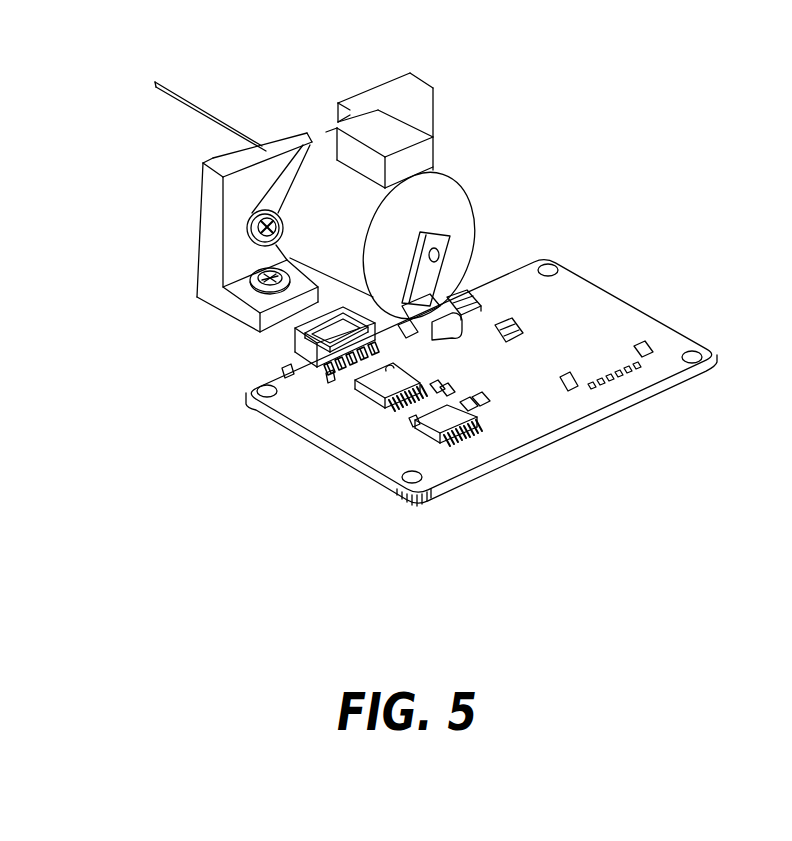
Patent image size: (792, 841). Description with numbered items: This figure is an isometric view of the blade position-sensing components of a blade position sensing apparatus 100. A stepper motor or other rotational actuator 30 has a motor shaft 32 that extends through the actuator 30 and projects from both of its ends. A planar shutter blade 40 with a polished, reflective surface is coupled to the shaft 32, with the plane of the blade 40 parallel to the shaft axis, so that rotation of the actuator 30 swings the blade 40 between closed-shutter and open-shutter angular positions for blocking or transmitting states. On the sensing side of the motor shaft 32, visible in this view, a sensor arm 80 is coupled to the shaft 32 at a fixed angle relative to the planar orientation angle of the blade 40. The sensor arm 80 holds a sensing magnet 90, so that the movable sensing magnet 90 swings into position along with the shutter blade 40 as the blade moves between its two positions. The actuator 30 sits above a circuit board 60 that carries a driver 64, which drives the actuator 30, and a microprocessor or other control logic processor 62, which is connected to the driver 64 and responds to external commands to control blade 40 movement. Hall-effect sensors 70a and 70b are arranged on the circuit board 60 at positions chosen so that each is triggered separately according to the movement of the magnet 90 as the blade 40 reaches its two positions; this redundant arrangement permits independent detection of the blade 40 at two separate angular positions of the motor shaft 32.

The blade position sensing apparatus 100 is at (663, 130).
The rotational actuator 30 is at (452, 203).
The motor shaft 32 is at (422, 254).
The shutter blade 40 is at (218, 108).
The circuit board 60 is at (641, 312).
The control logic processor 62 is at (443, 412).
The driver 64 is at (383, 380).
The Hall-effect sensor 70a is at (296, 328).
The Hall-effect sensor 70b is at (473, 292).
The sensor arm 80 is at (450, 236).
The sensing magnet 90 is at (432, 303).